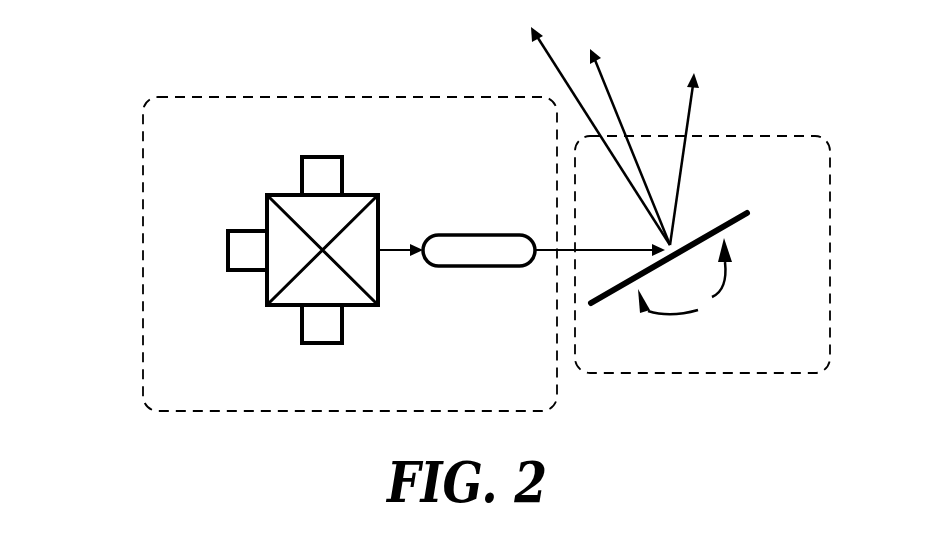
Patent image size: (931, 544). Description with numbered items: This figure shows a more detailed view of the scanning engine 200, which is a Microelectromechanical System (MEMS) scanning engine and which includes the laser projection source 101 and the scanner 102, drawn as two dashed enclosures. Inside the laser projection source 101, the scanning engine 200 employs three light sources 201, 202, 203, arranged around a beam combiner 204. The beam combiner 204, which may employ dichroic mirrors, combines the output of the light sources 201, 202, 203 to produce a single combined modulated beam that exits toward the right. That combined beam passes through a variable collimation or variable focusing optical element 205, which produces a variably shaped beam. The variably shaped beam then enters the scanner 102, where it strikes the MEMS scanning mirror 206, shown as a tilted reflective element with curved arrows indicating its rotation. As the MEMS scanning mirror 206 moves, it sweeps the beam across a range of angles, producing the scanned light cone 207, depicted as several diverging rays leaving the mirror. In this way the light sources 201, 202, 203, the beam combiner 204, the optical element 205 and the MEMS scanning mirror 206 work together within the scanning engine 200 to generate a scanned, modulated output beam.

The scanning engine 200 is at (102, 110).
The laser projection source 101 is at (142, 255).
The scanner 102 is at (684, 373).
The light source 201 is at (321, 177).
The light source 202 is at (240, 253).
The light source 203 is at (322, 322).
The beam combiner 204 is at (380, 223).
The variable collimation or variable focusing optical element 205 is at (455, 250).
The MEMS scanning mirror 206 is at (704, 232).
The scanned light cone 207 is at (690, 127).